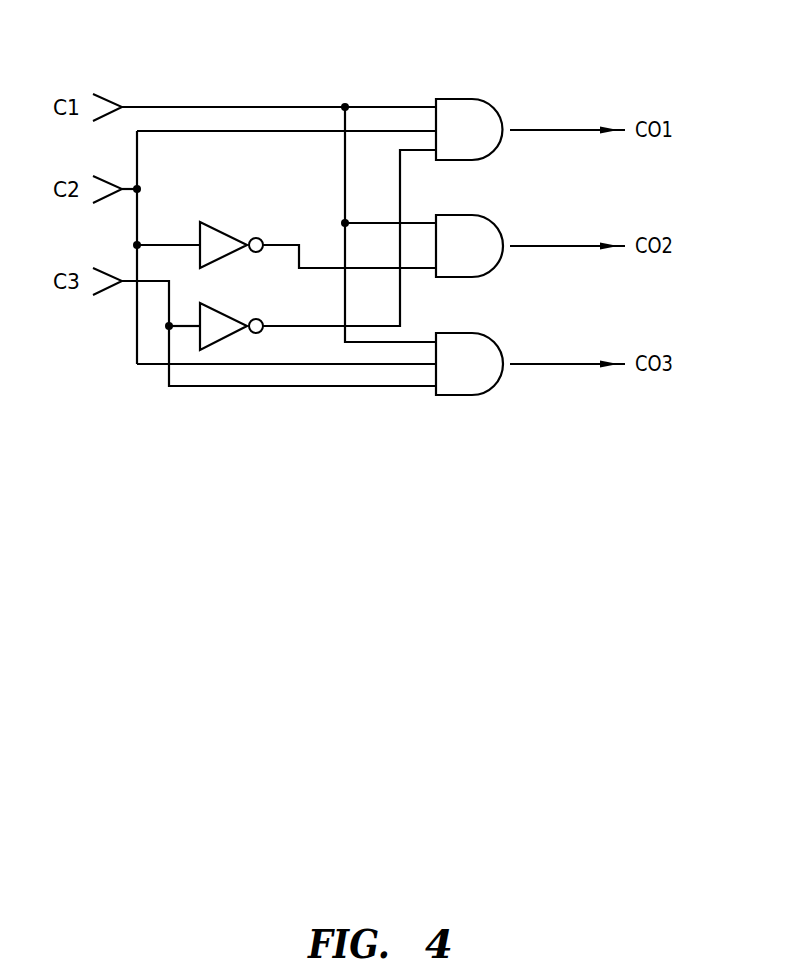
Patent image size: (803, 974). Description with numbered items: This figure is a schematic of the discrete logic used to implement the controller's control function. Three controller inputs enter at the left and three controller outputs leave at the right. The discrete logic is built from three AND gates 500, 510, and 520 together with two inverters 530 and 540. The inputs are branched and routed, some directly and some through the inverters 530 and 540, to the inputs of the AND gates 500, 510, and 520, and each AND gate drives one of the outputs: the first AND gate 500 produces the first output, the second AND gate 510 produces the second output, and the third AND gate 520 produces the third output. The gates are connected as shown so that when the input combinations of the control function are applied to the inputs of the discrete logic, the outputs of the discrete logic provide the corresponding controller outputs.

The AND gate 500 is at (472, 113).
The AND gate 510 is at (472, 234).
The AND gate 520 is at (473, 352).
The inverter 530 is at (212, 236).
The inverter 540 is at (212, 322).